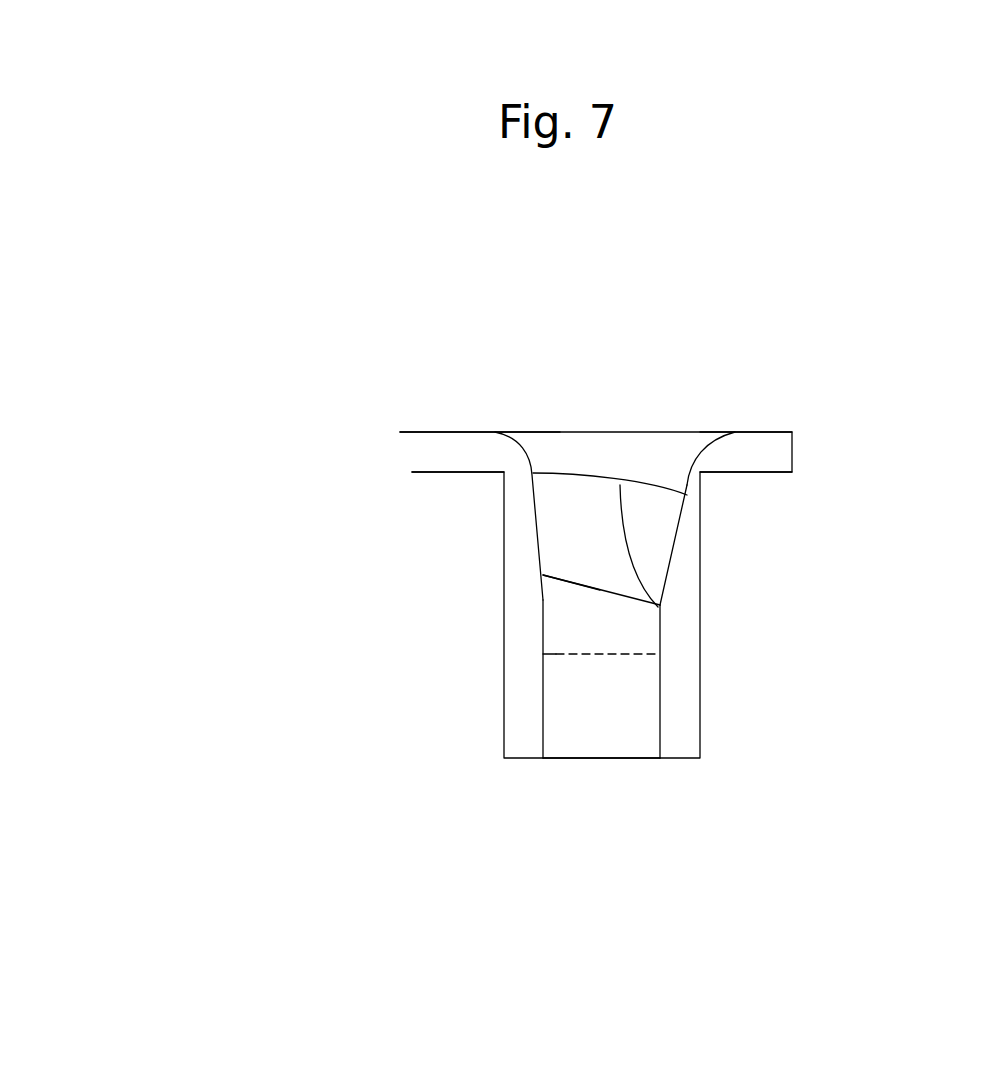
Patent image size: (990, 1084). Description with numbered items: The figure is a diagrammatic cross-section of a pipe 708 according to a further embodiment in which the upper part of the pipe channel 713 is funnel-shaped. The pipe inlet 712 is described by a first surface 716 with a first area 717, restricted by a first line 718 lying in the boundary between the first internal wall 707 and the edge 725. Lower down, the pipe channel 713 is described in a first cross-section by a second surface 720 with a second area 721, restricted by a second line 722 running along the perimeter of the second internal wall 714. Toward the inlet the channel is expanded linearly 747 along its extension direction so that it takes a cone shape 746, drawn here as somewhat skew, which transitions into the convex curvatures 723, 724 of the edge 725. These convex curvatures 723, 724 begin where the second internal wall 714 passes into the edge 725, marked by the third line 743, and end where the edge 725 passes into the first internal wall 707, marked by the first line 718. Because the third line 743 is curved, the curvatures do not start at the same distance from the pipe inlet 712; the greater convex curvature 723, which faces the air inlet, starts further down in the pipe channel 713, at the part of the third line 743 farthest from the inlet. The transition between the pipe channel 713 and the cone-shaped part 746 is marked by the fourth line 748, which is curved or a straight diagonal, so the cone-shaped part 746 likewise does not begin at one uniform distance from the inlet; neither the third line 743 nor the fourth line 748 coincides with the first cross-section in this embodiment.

The first internal wall 707 is at (792, 432).
The trench structure 708 is at (805, 813).
The pipe inlet 712 is at (537, 432).
The pipe channel 713 is at (608, 693).
The second internal wall 714 is at (557, 655).
The left upper sidewall 716 is at (560, 432).
The right upper sidewall 717 is at (653, 432).
The first line 718 is at (745, 432).
The left inner wall 720 is at (543, 693).
The right inner wall 721 is at (633, 655).
The boundary line 722 is at (545, 655).
The greater convex curvature 723 is at (718, 443).
The convex curvature 724 is at (530, 443).
The edge 725 is at (725, 438).
The third line 743 is at (652, 603).
The cone shape 746 is at (570, 548).
The linear expansion 747 is at (538, 510).
The fourth line 748 is at (568, 580).